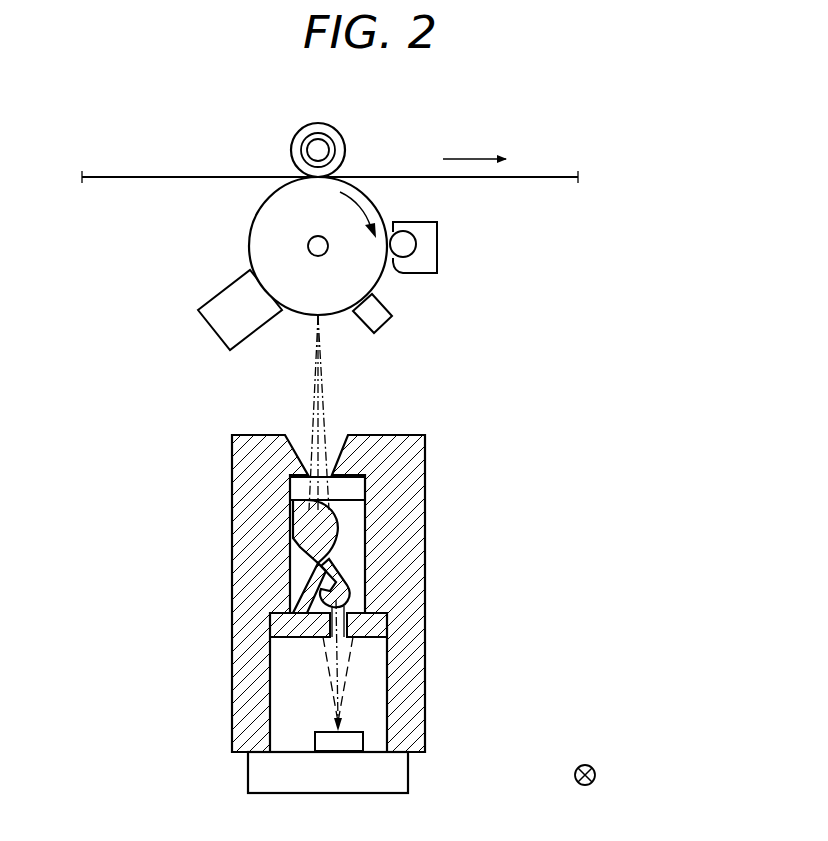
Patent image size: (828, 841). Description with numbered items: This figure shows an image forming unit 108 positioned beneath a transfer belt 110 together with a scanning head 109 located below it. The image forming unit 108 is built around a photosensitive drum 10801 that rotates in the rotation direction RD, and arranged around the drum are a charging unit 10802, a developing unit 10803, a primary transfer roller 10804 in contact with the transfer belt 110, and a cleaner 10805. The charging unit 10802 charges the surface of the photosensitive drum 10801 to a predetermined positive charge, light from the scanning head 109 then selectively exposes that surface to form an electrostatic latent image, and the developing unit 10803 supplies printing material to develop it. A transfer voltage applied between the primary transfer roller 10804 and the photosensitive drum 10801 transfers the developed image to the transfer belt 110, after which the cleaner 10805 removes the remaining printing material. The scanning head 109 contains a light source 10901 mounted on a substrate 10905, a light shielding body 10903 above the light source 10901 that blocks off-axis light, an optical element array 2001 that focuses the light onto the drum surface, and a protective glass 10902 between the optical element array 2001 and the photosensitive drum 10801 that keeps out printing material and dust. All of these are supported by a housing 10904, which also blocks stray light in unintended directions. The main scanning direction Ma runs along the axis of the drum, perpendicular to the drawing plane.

The image forming unit 108 is at (441, 114).
The scanning head 109 is at (552, 580).
The transfer belt 110 is at (185, 175).
The photosensitive drum 10801 is at (384, 283).
The charging unit 10802 is at (376, 332).
The developing unit 10803 is at (198, 316).
The primary transfer roller 10804 is at (318, 123).
The cleaner 10805 is at (438, 233).
The light source 10901 is at (321, 742).
The protective glass 10902 is at (366, 483).
The light shielding body 10903 is at (388, 622).
The housing 10904 is at (408, 664).
The substrate 10905 is at (406, 770).
The optical element array 2001 is at (332, 558).
The rotation direction RD is at (372, 200).
The main scanning direction Ma is at (586, 764).